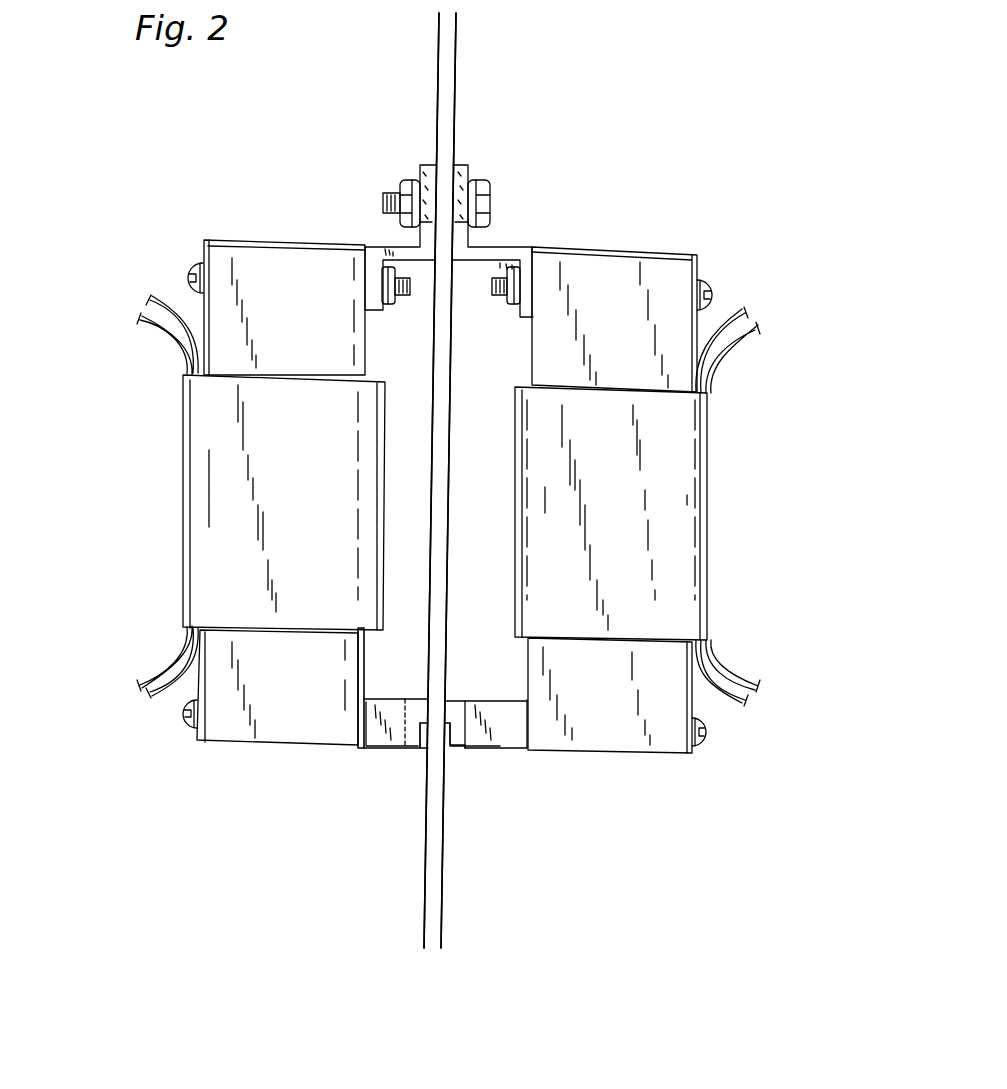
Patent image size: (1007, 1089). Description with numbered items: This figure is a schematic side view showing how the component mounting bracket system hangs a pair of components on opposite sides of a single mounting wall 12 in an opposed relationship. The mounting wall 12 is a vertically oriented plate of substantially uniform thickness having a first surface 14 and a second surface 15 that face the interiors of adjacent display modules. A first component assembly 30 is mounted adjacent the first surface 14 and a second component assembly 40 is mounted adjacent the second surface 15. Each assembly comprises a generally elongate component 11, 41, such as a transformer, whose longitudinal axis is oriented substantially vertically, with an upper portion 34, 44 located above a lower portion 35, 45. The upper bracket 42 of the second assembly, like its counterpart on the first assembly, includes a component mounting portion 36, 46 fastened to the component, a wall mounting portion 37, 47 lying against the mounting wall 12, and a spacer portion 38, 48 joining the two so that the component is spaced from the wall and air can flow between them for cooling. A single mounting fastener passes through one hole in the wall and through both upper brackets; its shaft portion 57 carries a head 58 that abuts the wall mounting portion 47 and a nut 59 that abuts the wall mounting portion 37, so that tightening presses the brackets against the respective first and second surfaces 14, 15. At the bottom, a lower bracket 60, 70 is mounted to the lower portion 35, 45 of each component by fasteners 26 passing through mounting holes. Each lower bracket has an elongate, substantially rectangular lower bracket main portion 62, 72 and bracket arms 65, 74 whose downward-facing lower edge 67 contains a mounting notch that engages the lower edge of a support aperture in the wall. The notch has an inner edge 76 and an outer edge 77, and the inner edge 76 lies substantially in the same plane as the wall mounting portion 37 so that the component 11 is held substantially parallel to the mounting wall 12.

The component 11 is at (215, 533).
The mounting wall 12 is at (437, 877).
The first surface 14 is at (437, 76).
The second surface 15 is at (455, 85).
The fastener 26 is at (190, 278).
The first component assembly 30 is at (140, 416).
The upper portion 34 is at (238, 260).
The lower portion 35 is at (220, 727).
The component mounting portion 36 is at (375, 312).
The wall mounting portion 37 is at (428, 165).
The spacer portion 38 is at (378, 248).
The second component assembly 40 is at (775, 505).
The component 41 is at (662, 442).
The upper bracket 42 is at (510, 250).
The upper portion 44 is at (700, 268).
The lower portion 45 is at (687, 755).
The component mounting portion 46 is at (525, 318).
The wall mounting portion 47 is at (468, 170).
The spacer portion 48 is at (533, 247).
The shaft portion 57 is at (385, 205).
The head 58 is at (492, 201).
The nut 59 is at (410, 184).
The lower bracket 60 is at (362, 694).
The lower bracket main portion 62 is at (378, 688).
The bracket arm 65 is at (368, 718).
The lower edge 67 is at (380, 748).
The lower bracket 70 is at (503, 730).
The lower bracket main portion 72 is at (527, 700).
The bracket arm 74 is at (475, 748).
The inner edge 76 is at (410, 748).
The outer edge 77 is at (456, 737).